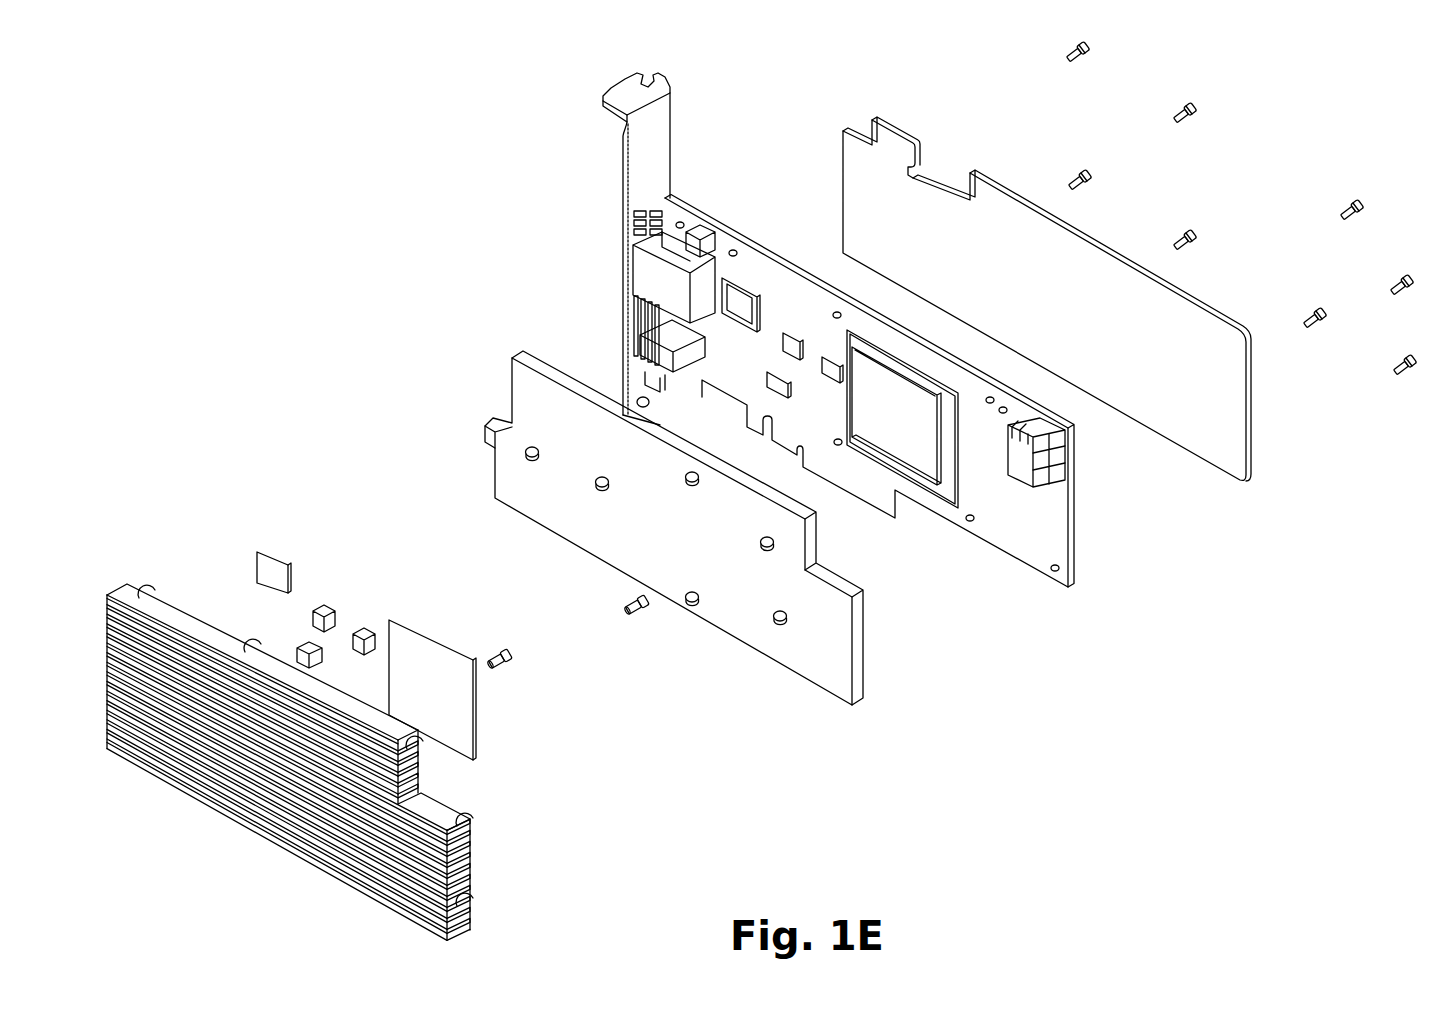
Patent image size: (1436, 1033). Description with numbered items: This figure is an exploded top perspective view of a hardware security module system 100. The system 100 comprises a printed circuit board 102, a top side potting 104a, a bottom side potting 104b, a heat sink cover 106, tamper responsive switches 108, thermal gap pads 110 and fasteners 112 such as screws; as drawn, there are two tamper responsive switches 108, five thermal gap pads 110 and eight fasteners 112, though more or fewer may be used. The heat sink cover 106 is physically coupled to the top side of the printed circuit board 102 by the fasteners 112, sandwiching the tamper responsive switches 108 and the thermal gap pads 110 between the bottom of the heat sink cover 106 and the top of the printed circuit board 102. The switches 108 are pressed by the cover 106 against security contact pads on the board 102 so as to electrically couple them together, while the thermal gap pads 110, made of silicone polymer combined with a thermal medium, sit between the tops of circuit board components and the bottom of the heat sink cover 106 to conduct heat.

The hardware security module system 100 is at (198, 70).
The printed circuit board 102 is at (1034, 614).
The top side potting 104a is at (836, 729).
The bottom side potting 104b is at (1226, 502).
The heat sink cover 106 is at (131, 557).
The tamper responsive switches 108 is at (510, 681).
The thermal gap pads 110 is at (274, 533).
The fasteners 112 is at (1205, 218).